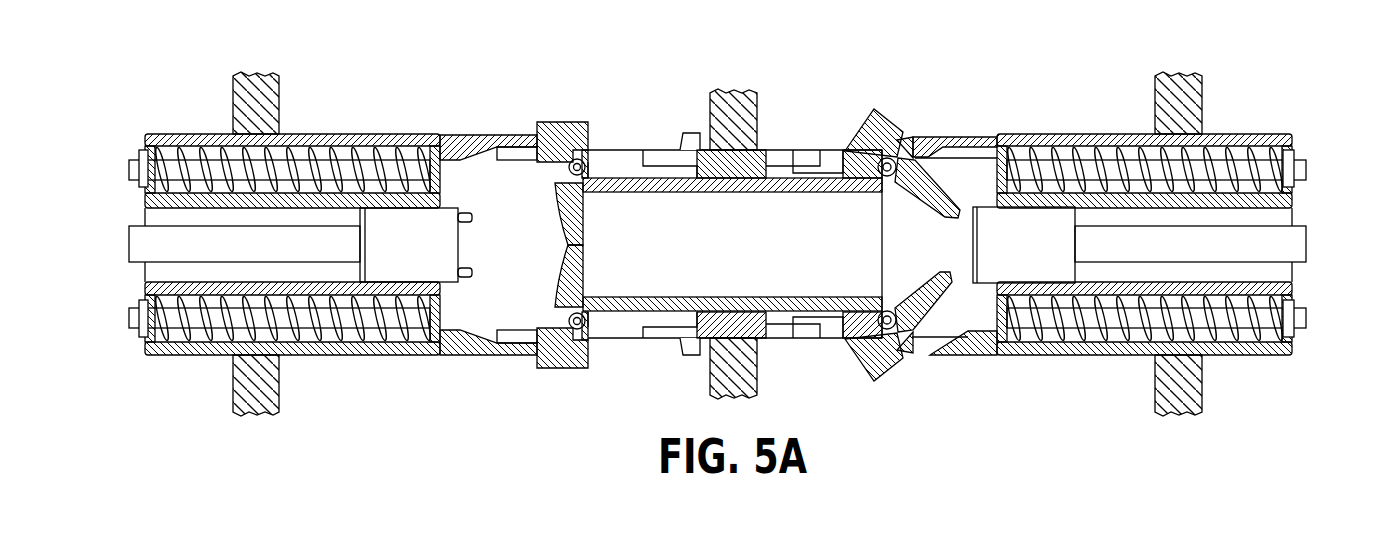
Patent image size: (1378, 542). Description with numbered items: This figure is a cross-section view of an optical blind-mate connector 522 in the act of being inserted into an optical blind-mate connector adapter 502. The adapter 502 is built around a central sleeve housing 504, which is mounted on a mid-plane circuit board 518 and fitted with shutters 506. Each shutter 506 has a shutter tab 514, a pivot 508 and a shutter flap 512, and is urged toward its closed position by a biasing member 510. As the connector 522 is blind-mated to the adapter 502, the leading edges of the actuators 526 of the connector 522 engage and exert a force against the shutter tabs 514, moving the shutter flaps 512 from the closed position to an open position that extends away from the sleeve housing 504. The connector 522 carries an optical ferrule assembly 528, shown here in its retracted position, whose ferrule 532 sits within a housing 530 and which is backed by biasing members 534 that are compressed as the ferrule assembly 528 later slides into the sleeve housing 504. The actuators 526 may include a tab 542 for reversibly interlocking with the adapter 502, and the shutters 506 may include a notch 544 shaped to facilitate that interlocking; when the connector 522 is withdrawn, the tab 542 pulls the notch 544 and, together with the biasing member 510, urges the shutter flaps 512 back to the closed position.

The optical blind-mate connector adapter 502 is at (660, 102).
The sleeve housing 504 is at (647, 339).
The shutter 506 is at (895, 155).
The pivot 508 is at (888, 188).
The biasing member 510 is at (867, 306).
The shutter flap 512 is at (921, 202).
The shutter tab 514 is at (857, 125).
The mid-plane circuit board 518 is at (757, 105).
The optical blind-mate connector 522 is at (1104, 99).
The actuator 526 is at (977, 357).
The optical ferrule assembly 528 is at (1303, 210).
The housing 530 is at (1291, 293).
The ferrule 532 is at (972, 262).
The biasing member 534 is at (1268, 148).
The tab 542 is at (922, 352).
The notch 544 is at (552, 176).